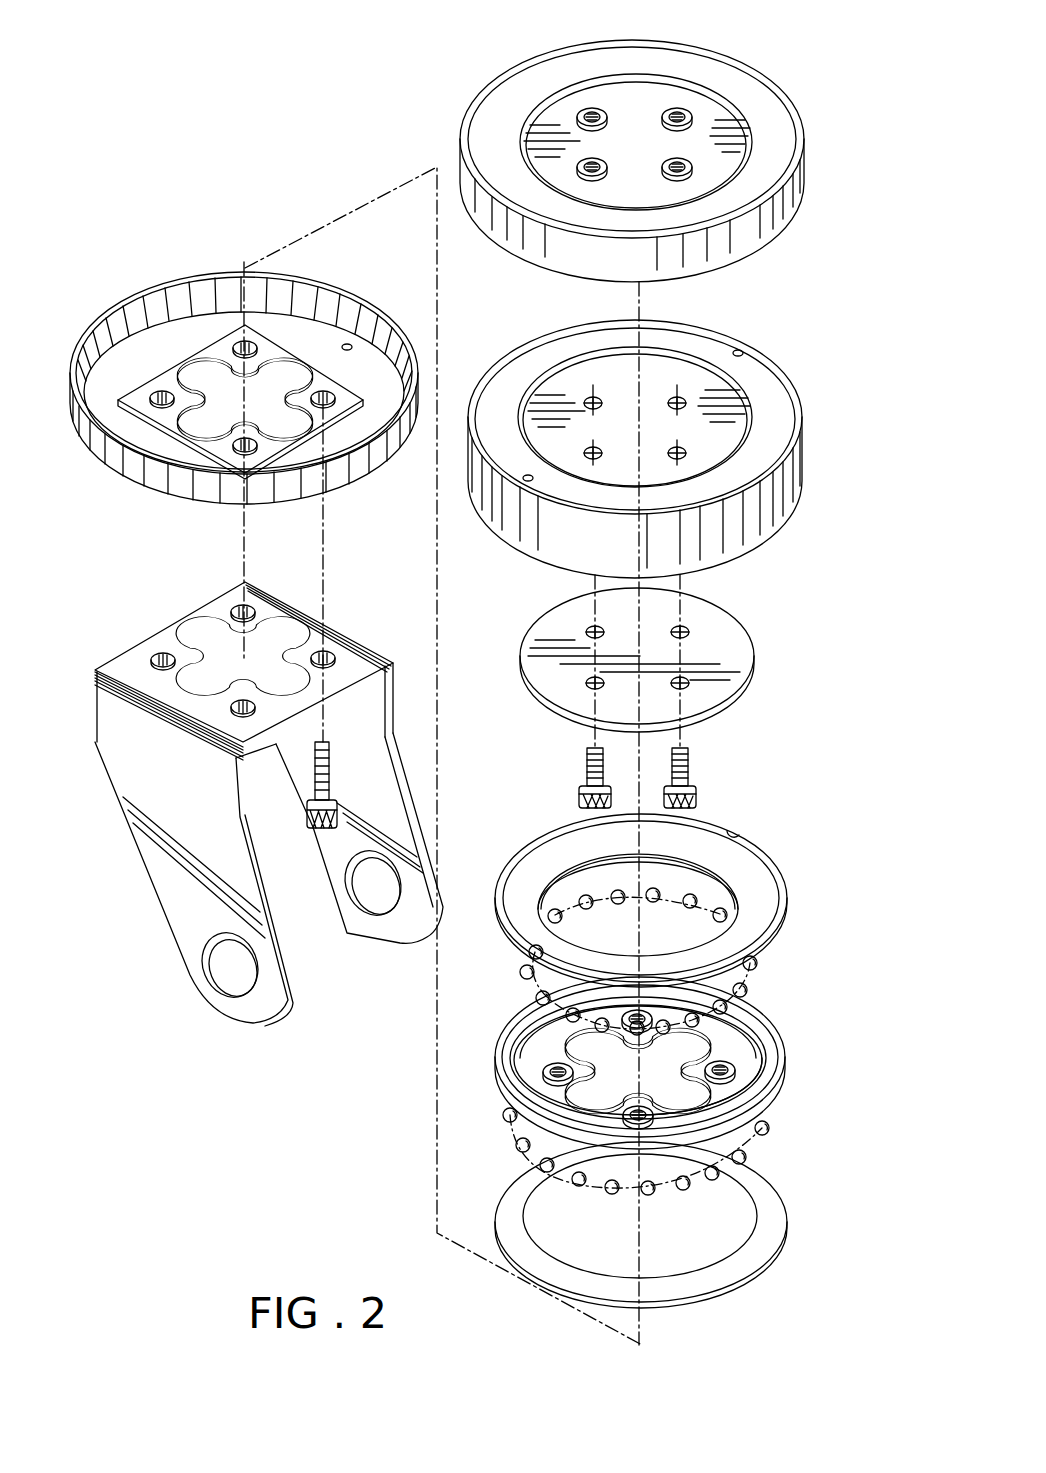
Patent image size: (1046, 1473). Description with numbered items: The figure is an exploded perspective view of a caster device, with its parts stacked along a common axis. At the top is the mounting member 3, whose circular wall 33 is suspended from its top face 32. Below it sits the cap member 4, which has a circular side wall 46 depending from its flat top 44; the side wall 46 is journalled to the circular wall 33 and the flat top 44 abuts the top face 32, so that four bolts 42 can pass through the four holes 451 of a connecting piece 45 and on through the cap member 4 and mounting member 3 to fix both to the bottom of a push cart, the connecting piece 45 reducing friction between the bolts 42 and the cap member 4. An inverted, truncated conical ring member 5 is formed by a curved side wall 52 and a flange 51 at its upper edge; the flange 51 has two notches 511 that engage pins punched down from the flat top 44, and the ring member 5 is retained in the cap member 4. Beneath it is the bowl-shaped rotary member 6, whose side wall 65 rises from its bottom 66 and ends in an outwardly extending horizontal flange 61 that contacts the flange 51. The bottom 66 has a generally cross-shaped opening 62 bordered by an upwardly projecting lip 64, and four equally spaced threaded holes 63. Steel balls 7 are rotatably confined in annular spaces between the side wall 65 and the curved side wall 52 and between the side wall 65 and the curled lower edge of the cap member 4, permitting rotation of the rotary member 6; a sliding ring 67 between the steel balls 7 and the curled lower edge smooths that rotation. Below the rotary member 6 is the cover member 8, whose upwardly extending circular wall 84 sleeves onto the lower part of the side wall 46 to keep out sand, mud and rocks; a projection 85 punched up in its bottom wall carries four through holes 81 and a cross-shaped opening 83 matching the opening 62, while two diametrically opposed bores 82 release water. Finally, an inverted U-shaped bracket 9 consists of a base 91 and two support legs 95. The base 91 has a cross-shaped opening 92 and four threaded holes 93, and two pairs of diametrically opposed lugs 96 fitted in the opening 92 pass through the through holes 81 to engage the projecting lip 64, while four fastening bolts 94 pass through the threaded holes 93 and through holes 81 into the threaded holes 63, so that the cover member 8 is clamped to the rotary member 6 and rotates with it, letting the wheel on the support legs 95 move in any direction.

The mounting member 3 is at (647, 142).
The top face 32 is at (683, 55).
The circular wall 33 is at (770, 223).
The cap member 4 is at (656, 447).
The flat top 44 is at (770, 388).
The circular side wall 46 is at (758, 530).
The connecting piece 45 is at (664, 657).
The holes 451 is at (685, 628).
The bolts 42 is at (690, 770).
The ring member 5 is at (668, 881).
The flange 51 is at (777, 893).
The notches 511 is at (735, 832).
The curved side wall 52 is at (543, 858).
The steel balls 7 is at (758, 963).
The rotary member 6 is at (642, 1056).
The horizontal flange 61 is at (783, 1068).
The opening 62 is at (540, 1082).
The threaded holes 63 is at (683, 1058).
The projecting lip 64 is at (760, 1102).
The side wall 65 is at (738, 1017).
The bottom 66 is at (538, 1040).
The sliding ring 67 is at (760, 1247).
The cover member 8 is at (246, 347).
The through holes 81 is at (242, 437).
The bores 82 is at (352, 345).
The cross-shaped opening 83 is at (290, 377).
The circular wall 84 is at (347, 310).
The projection 85 is at (160, 383).
The bracket 9 is at (256, 783).
The base 91 is at (136, 657).
The cross-shaped opening 92 is at (297, 625).
The threaded holes 93 is at (335, 650).
The fastening bolts 94 is at (317, 828).
The support legs 95 is at (173, 926).
The lugs 96 is at (179, 644).